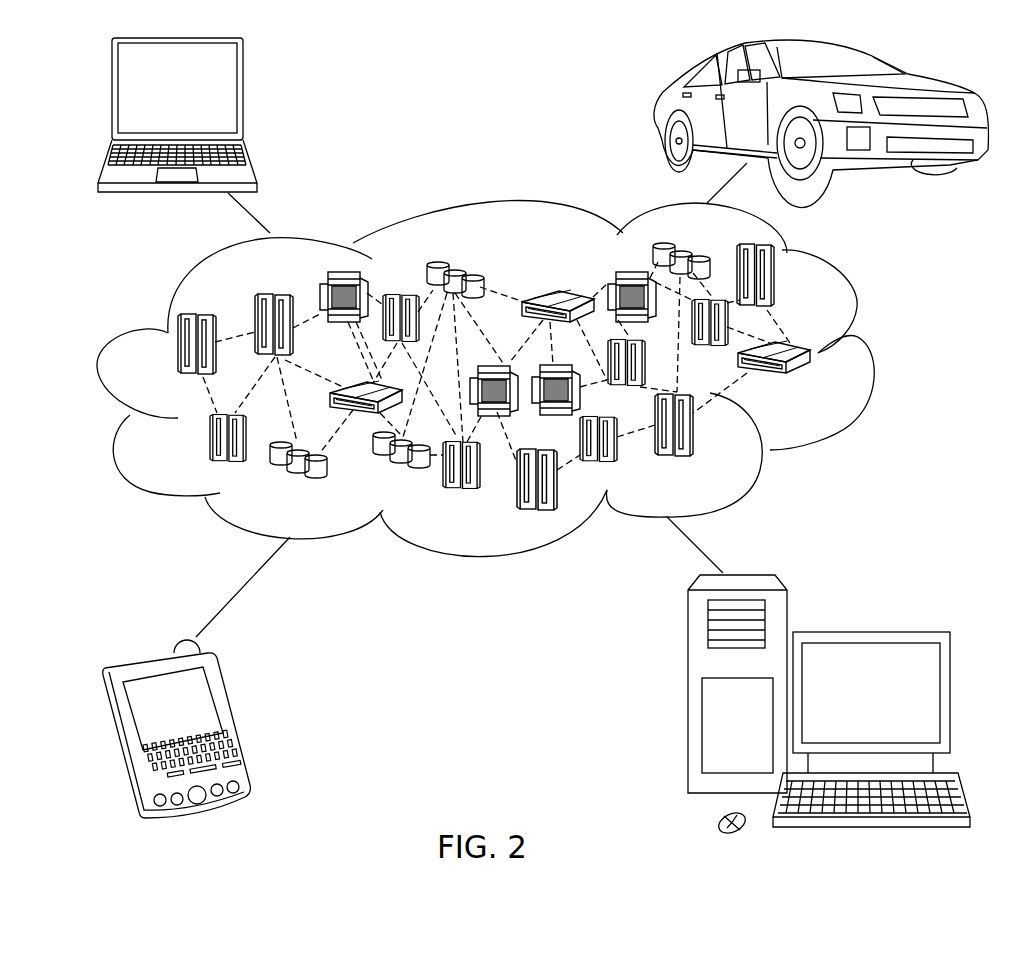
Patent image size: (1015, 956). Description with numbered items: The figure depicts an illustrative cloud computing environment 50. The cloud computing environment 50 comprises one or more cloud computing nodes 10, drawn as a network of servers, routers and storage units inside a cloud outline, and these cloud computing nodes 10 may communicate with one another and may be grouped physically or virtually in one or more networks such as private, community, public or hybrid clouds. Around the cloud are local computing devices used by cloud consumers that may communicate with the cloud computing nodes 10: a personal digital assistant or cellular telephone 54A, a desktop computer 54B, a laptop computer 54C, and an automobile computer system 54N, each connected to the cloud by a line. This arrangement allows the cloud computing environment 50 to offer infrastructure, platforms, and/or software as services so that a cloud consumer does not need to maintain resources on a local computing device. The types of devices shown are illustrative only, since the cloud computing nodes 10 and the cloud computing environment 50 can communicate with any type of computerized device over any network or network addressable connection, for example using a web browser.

The laptop computer 54C is at (242, 96).
The automobile computer system 54N is at (661, 112).
The personal digital assistant (PDA) or cellular telephone 54A is at (230, 720).
The desktop computer 54B is at (868, 632).
The cloud computing environment 50 is at (868, 353).
The cloud computing node 10 is at (818, 388).